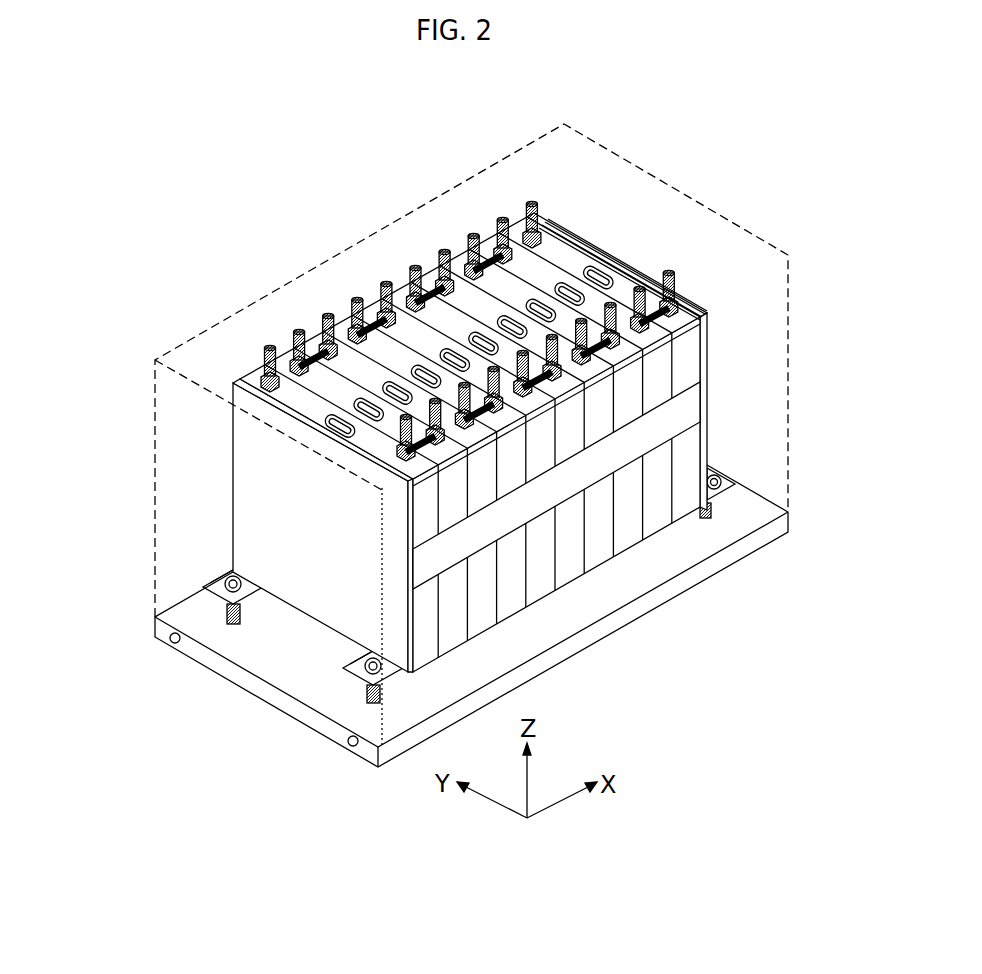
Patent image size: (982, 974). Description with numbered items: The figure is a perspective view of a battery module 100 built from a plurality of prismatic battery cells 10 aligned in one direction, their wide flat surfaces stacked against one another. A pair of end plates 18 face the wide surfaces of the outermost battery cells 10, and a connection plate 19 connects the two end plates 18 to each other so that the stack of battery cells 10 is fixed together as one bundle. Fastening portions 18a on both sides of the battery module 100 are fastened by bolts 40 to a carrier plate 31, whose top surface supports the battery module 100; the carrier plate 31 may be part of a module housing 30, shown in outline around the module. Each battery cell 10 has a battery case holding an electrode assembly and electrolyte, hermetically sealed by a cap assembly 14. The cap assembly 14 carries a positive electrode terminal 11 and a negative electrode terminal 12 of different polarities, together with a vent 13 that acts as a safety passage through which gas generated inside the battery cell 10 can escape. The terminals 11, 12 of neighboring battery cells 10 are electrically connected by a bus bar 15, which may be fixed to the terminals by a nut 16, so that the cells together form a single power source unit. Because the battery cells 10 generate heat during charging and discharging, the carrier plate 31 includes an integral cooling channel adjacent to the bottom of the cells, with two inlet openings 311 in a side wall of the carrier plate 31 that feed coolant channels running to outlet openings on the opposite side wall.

The battery module 100 is at (533, 376).
The battery cell 10 is at (630, 529).
The positive electrode terminal 11 is at (531, 202).
The negative electrode terminal 12 is at (668, 272).
The vent 13 is at (600, 248).
The cap assembly 14 is at (630, 266).
The bus bar 15 is at (295, 331).
The nut 16 is at (265, 347).
The end plate 18 is at (724, 453).
The fastening portion 18a is at (207, 575).
The connection plate 19 is at (692, 412).
The module housing 30 is at (492, 146).
The carrier plate 31 is at (602, 630).
The inlet opening 311 is at (175, 643).
The bolt 40 is at (247, 603).